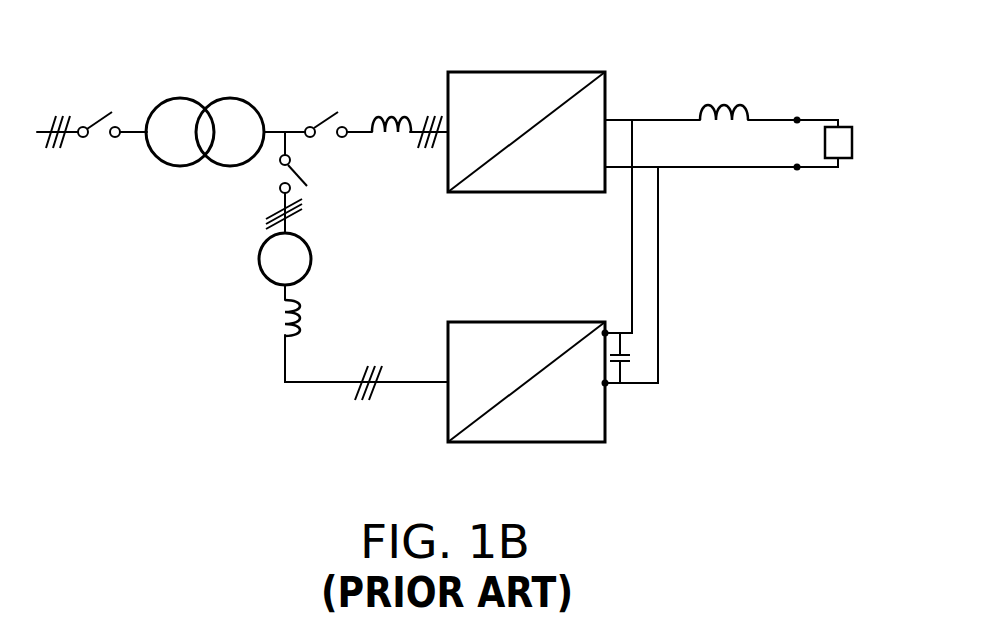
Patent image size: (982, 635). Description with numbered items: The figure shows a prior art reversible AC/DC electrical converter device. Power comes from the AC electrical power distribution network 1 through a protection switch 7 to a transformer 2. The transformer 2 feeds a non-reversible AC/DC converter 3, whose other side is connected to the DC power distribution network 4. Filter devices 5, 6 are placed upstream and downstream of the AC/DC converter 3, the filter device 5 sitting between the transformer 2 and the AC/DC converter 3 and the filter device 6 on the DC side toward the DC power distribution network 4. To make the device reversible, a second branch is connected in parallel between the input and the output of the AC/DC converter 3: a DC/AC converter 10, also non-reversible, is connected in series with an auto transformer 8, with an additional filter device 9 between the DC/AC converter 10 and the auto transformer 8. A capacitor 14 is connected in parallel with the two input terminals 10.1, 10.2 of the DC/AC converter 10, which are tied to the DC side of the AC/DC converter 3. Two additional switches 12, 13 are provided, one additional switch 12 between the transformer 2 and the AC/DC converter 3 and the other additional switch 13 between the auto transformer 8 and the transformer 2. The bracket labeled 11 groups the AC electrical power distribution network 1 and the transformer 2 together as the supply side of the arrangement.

The AC electrical power distribution network 1 is at (62, 147).
The transformer 2 is at (230, 147).
The AC/DC converter 3 is at (520, 178).
The DC power distribution network 4 is at (840, 153).
The filter device 5 is at (395, 118).
The filter device 6 is at (730, 105).
The protection switch 7 is at (100, 112).
The auto transformer 8 is at (273, 265).
The additional filter device 9 is at (303, 317).
The DC/AC converter 10 is at (528, 433).
The input terminal 10.1 is at (612, 322).
The input terminal 10.2 is at (608, 385).
The power supply unit 11 is at (225, 217).
The additional switch 12 is at (325, 137).
The additional switch 13 is at (298, 183).
The capacitor 14 is at (627, 357).